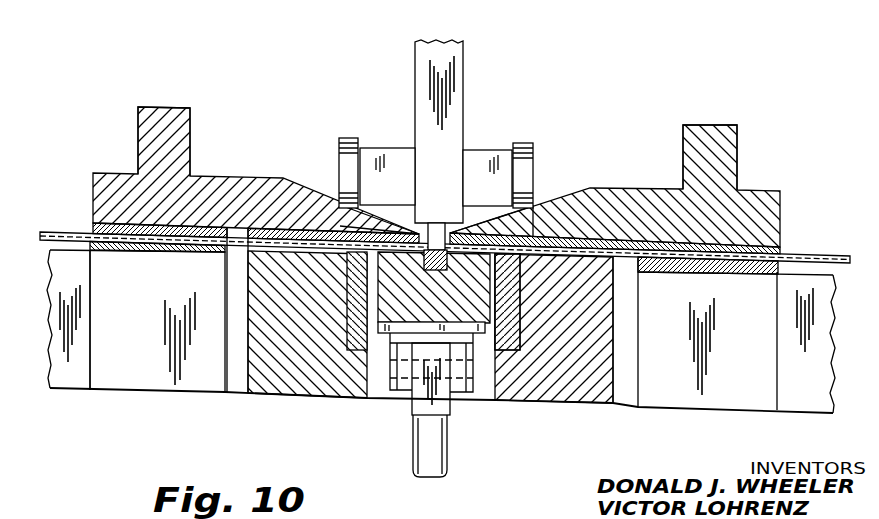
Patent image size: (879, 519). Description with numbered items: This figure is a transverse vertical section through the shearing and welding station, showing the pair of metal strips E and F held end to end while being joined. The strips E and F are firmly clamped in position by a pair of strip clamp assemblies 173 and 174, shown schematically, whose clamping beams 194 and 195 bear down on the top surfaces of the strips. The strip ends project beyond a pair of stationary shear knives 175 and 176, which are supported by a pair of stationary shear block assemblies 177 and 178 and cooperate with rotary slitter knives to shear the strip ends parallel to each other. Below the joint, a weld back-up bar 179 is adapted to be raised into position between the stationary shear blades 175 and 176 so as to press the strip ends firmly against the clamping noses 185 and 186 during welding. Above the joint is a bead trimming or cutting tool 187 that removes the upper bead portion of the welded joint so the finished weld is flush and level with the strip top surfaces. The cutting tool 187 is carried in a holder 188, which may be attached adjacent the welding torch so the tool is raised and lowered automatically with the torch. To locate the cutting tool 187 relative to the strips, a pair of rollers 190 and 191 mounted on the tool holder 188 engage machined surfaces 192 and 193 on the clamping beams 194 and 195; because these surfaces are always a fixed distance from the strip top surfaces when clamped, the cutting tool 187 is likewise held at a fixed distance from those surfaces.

The strip clamp assembly 173 is at (128, 140).
The strip clamp assembly 174 is at (638, 178).
The stationary shear knife 175 is at (355, 277).
The stationary shear knife 176 is at (516, 327).
The stationary shear block assembly 177 is at (344, 378).
The stationary shear block assembly 178 is at (542, 398).
The weld back-up bar 179 is at (478, 337).
The clamping nose 185 is at (407, 228).
The clamping nose 186 is at (463, 228).
The bead trimming or cutting tool 187 is at (437, 223).
The tool holder 188 is at (418, 70).
The roller 190 is at (348, 137).
The roller 191 is at (529, 143).
The machined surface 192 is at (336, 212).
The machined surface 193 is at (538, 214).
The clamping beam 194 is at (230, 190).
The clamping beam 195 is at (660, 198).
The strip E is at (176, 252).
The strip F is at (553, 265).